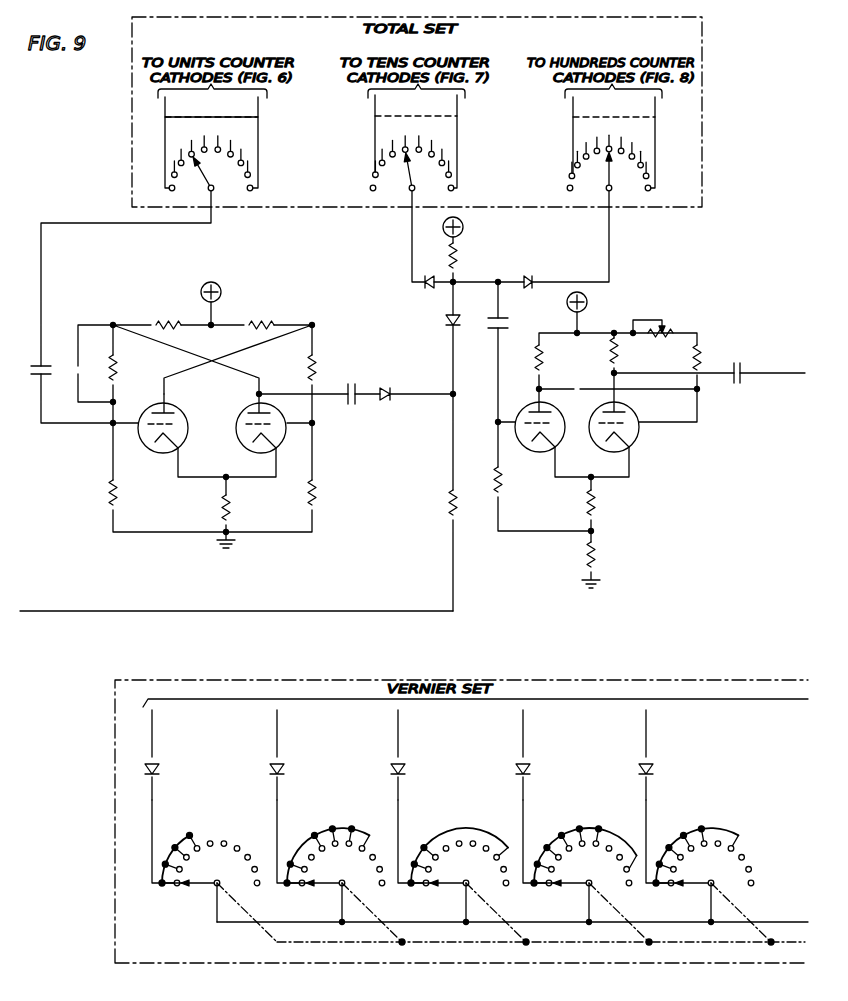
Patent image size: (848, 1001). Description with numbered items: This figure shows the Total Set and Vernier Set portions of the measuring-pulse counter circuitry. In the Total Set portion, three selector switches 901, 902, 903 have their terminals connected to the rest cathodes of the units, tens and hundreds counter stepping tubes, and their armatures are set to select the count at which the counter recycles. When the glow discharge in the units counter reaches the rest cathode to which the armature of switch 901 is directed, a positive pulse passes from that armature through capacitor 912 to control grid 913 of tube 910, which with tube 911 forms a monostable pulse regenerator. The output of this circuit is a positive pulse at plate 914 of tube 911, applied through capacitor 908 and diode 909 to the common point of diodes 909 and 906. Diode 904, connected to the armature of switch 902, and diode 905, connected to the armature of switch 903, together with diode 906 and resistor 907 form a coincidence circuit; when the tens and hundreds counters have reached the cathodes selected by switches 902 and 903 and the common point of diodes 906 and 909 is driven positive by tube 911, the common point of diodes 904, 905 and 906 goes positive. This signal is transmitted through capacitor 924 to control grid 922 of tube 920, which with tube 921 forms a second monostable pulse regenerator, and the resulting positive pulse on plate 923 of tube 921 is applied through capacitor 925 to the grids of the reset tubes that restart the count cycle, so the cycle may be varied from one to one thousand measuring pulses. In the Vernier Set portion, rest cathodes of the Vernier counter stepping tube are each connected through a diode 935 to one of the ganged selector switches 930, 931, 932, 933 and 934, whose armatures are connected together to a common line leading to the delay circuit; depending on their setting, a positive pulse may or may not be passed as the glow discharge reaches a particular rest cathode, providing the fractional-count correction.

The Total Set switch 901 is at (206, 205).
The Total Set switch 902 is at (404, 205).
The Total Set switch 903 is at (604, 205).
The diode 904 is at (430, 289).
The diode 905 is at (532, 276).
The diode 906 is at (444, 325).
The resistor 907 is at (462, 259).
The capacitor 908 is at (356, 384).
The diode 909 is at (388, 387).
The tube 910 is at (183, 414).
The tube 911 is at (238, 438).
The capacitor 912 is at (43, 366).
The control grid 913 is at (151, 403).
The plate 914 is at (254, 403).
The tube 920 is at (549, 443).
The tube 921 is at (630, 443).
The control grid 922 is at (518, 417).
The plate 923 is at (621, 408).
The capacitor 924 is at (494, 328).
The capacitor 925 is at (742, 370).
The Vernier set selector switch 930 is at (205, 914).
The Vernier set selector switch 931 is at (327, 914).
The Vernier set selector switch 932 is at (451, 914).
The Vernier set selector switch 933 is at (573, 914).
The Vernier set selector switch 934 is at (695, 914).
The diode 935 is at (158, 770).